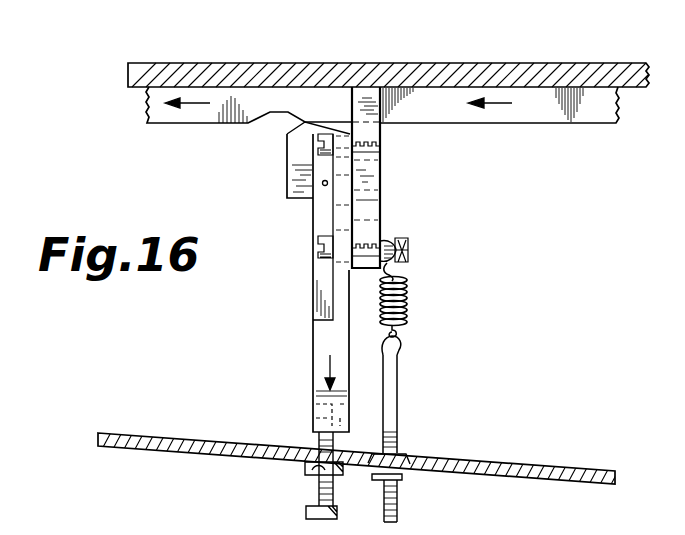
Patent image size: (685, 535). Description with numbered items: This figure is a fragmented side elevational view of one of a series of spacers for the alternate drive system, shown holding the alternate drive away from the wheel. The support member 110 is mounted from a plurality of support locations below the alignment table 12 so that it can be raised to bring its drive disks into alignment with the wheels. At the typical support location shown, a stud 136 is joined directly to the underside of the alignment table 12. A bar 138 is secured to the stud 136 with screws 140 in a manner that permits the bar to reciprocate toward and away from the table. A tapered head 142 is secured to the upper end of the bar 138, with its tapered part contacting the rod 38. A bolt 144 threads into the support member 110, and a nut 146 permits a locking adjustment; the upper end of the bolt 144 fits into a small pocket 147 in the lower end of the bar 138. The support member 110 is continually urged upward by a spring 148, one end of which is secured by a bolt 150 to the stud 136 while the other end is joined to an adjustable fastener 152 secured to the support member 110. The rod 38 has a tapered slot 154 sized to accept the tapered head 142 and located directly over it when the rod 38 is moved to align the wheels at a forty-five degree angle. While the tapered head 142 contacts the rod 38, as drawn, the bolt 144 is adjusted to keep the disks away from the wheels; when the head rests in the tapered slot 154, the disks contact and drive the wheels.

The alignment table 12 is at (518, 66).
The rod 38 is at (586, 110).
The support member 110 is at (443, 471).
The stud 136 is at (380, 176).
The bar 138 is at (313, 338).
The screws 140 is at (316, 137).
The tapered head 142 is at (293, 178).
The bolt 144 is at (319, 500).
The nut 146 is at (305, 468).
The pocket 147 is at (313, 400).
The spring 148 is at (408, 300).
The bolt 150 is at (409, 250).
The adjustable fastener 152 is at (398, 390).
The tapered slot 154 is at (270, 115).